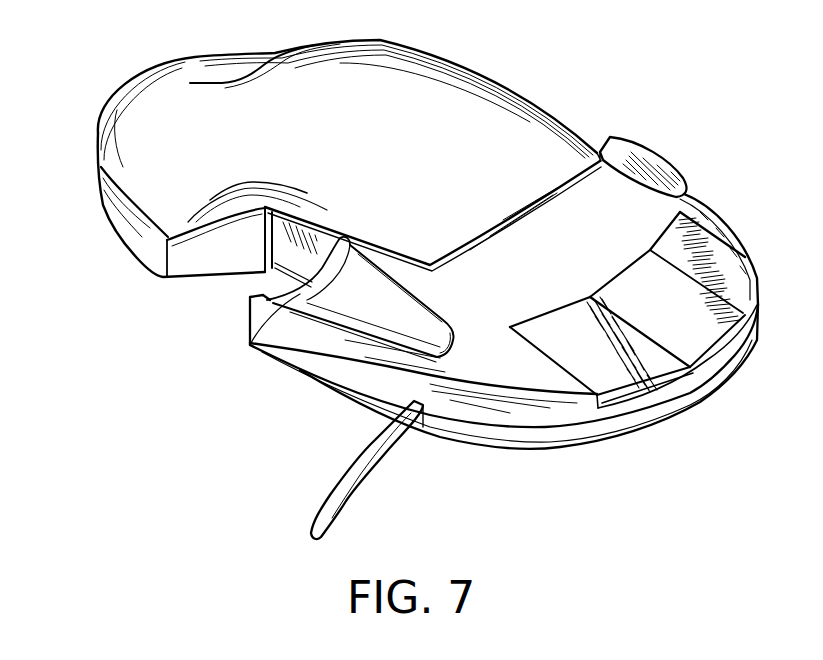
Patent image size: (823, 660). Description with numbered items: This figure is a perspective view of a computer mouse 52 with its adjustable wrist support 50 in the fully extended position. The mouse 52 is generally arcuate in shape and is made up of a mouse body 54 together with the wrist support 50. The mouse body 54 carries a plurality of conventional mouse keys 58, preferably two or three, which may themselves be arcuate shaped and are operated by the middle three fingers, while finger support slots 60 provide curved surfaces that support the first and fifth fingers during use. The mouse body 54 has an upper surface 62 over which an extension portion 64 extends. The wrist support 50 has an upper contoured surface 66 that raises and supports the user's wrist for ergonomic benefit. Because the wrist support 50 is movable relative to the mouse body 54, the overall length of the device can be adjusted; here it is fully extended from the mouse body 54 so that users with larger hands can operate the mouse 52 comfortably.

The adjustable wrist support 50 is at (104, 236).
The computer mouse 52 is at (554, 110).
The mouse body 54 is at (613, 453).
The mouse keys 58 is at (671, 316).
The finger support slots 60 is at (633, 170).
The upper surface 62 is at (594, 264).
The extension portion 64 is at (352, 249).
The upper contoured surface 66 is at (428, 171).